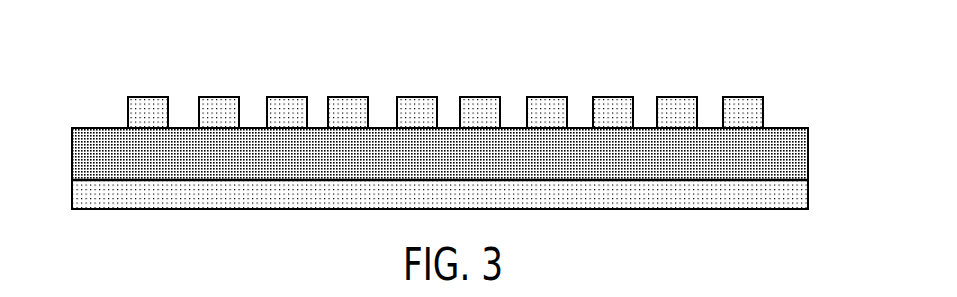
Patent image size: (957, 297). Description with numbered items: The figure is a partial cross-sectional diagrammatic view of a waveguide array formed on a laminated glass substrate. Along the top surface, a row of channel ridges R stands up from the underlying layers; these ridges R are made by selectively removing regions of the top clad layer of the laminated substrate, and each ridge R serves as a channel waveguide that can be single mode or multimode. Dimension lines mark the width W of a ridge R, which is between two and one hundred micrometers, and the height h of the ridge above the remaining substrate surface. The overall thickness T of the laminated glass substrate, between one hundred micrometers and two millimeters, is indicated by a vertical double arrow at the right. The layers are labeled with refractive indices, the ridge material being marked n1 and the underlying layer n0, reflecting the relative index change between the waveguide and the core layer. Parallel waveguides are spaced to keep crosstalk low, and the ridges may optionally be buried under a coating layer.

The substrate layer with refractive index n0 is at (97, 165).
The grating ridge layer with refractive index n1 is at (425, 83).
The channel ridge R is at (405, 108).
The width W is at (800, 53).
The ridge height h is at (923, 98).
The thickness T is at (868, 208).